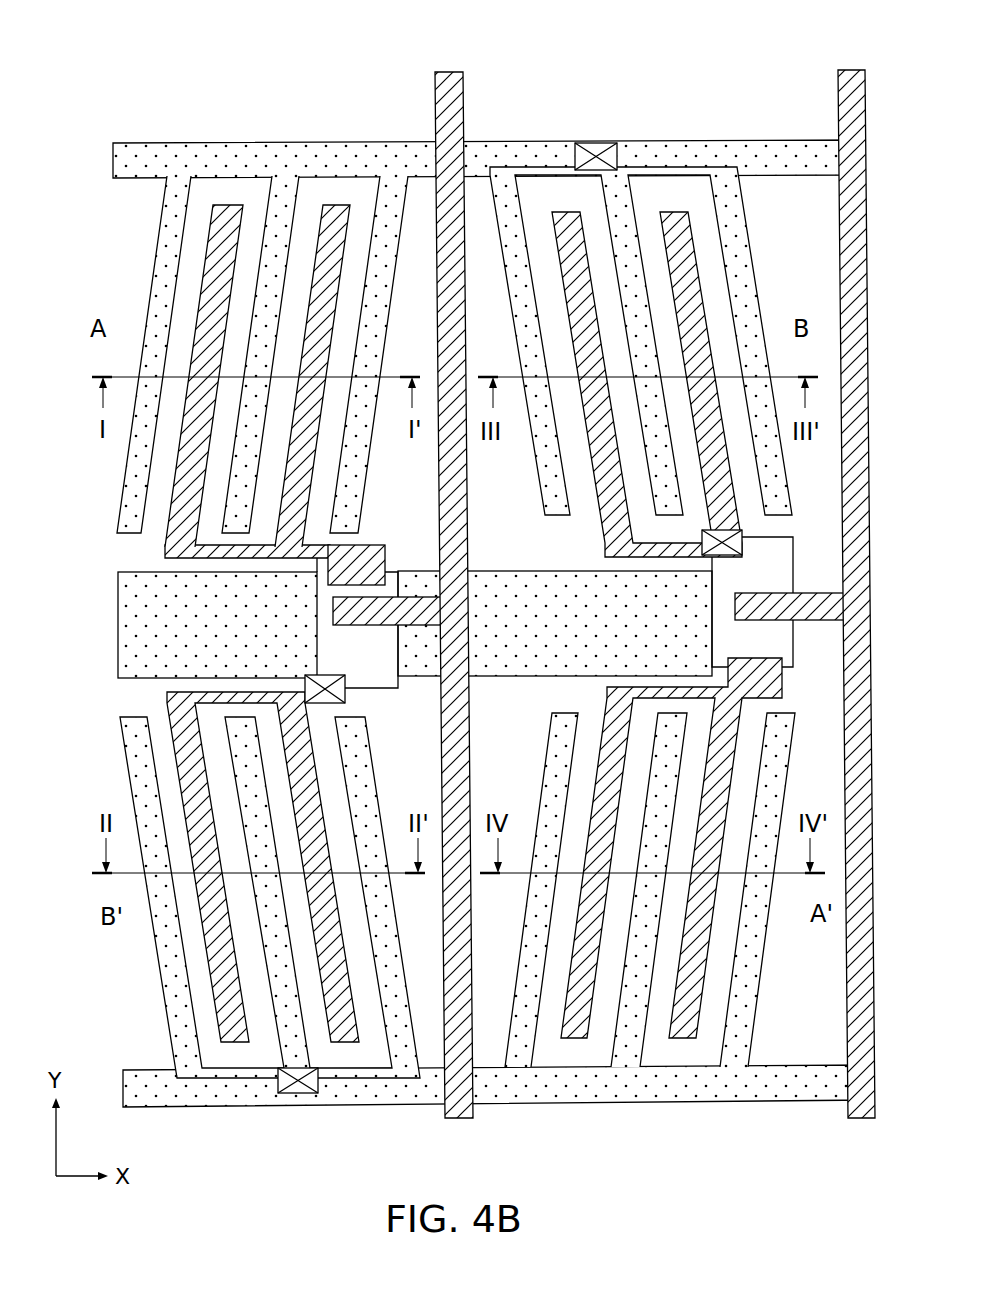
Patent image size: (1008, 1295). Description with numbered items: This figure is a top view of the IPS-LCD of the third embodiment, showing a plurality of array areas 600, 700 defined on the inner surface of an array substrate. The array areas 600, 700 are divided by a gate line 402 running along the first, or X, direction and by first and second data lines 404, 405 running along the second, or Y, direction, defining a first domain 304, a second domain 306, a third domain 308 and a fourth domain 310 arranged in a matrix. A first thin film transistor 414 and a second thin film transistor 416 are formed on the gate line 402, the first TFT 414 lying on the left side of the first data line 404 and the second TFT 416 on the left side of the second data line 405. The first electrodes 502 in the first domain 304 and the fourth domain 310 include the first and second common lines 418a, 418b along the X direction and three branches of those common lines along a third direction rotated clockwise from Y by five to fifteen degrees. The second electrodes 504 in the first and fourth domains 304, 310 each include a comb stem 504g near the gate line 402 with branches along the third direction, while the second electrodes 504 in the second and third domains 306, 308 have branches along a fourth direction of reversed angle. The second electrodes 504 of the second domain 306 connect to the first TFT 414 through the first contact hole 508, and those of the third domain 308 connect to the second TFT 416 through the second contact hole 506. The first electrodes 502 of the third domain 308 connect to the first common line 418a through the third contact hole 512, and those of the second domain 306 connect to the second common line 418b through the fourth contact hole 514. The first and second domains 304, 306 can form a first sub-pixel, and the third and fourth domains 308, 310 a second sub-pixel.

The first common line 418a is at (131, 147).
The second common line 418b is at (152, 1093).
The gate line 402 is at (120, 621).
The first data line 404 is at (447, 77).
The second data line 405 is at (853, 75).
The first thin film transistor 414 is at (389, 562).
The second thin film transistor 416 is at (793, 541).
The first electrodes 502 is at (283, 200).
The second electrodes 504 is at (233, 205).
The comb stem 504g is at (200, 552).
The second contact hole 506 is at (702, 536).
The first contact hole 508 is at (345, 690).
The third contact hole 512 is at (594, 150).
The fourth contact hole 514 is at (300, 1093).
The first domain 304 is at (139, 235).
The second domain 306 is at (146, 1042).
The third domain 308 is at (819, 230).
The fourth domain 310 is at (824, 1040).
The array area 600 is at (310, 47).
The array area 700 is at (662, 47).